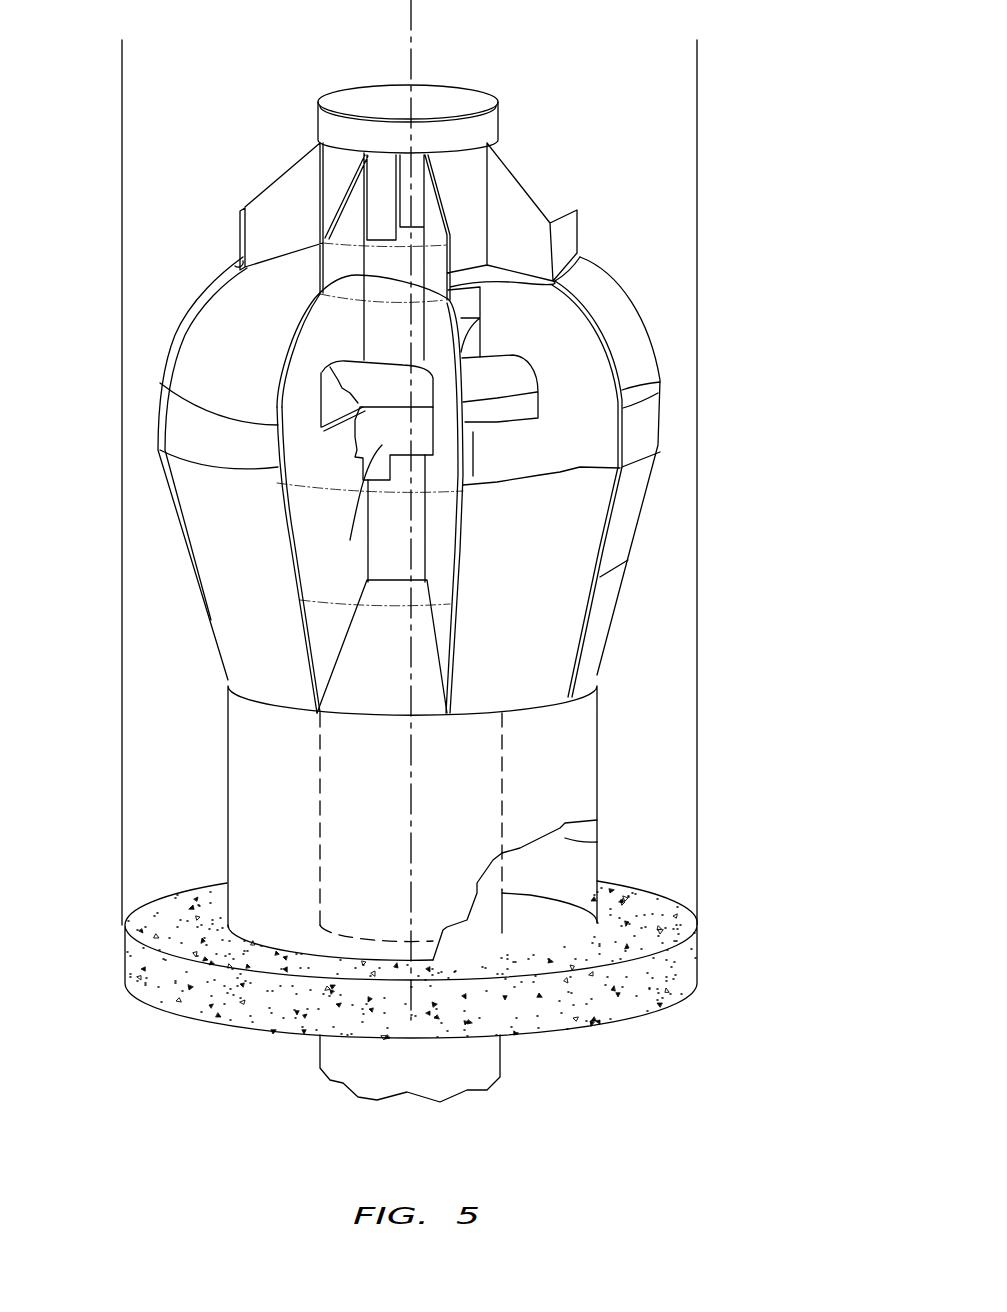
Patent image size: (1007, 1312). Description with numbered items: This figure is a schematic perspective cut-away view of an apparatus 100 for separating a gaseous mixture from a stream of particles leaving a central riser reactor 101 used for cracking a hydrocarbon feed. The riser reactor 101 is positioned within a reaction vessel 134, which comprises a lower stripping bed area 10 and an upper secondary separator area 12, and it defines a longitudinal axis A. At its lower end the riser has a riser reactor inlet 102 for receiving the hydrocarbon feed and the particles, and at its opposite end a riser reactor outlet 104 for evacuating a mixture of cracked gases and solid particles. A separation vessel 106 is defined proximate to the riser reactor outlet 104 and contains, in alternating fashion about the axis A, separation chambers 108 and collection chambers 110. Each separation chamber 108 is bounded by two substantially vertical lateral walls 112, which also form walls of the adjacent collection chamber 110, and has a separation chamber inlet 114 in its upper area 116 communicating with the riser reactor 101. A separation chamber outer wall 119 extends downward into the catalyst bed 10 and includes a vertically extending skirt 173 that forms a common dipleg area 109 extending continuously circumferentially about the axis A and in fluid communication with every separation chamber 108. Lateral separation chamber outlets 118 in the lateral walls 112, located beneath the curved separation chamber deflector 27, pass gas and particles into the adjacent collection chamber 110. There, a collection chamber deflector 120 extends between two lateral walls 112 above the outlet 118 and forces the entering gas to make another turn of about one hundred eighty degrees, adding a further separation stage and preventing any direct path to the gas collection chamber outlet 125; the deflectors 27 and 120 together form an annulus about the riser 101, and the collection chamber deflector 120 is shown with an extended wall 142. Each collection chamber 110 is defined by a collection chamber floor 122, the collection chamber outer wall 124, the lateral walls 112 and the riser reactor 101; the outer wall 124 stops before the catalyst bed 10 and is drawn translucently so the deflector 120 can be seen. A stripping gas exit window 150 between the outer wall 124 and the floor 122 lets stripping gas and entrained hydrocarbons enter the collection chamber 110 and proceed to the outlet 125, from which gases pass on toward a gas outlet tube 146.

The longitudinal axis A is at (413, 6).
The apparatus 100 is at (762, 116).
The riser reactor outlet 104 is at (347, 88).
The gas outlet tube 146 is at (479, 86).
The gas collection chamber outlet 125 is at (381, 210).
The reaction vessel 134 is at (708, 231).
The separation vessel 106 is at (614, 269).
The separation chamber outer wall 119 is at (228, 303).
The lateral separation chamber outlet 118 is at (321, 398).
The separation chamber inlet 114 is at (450, 295).
The upper area 116 is at (592, 382).
The separation chamber deflector 27 is at (510, 378).
The vertical lateral walls 112 is at (623, 391).
The collection chamber outer wall 124 is at (650, 415).
The separation chamber 108 is at (604, 441).
The collection chamber deflector 120 is at (403, 444).
The extended wall 142 is at (316, 519).
The collection chamber 110 is at (300, 541).
The collection chamber floor 122 is at (343, 700).
The stripping gas exit window 150 is at (380, 680).
The vertically extending skirt 173 is at (262, 838).
The common dipleg area 109 is at (597, 842).
The central riser reactor 101 is at (527, 896).
The lower stripping bed area 10 is at (162, 915).
The upper secondary separator area 12 is at (659, 906).
The riser reactor inlet 102 is at (463, 1113).